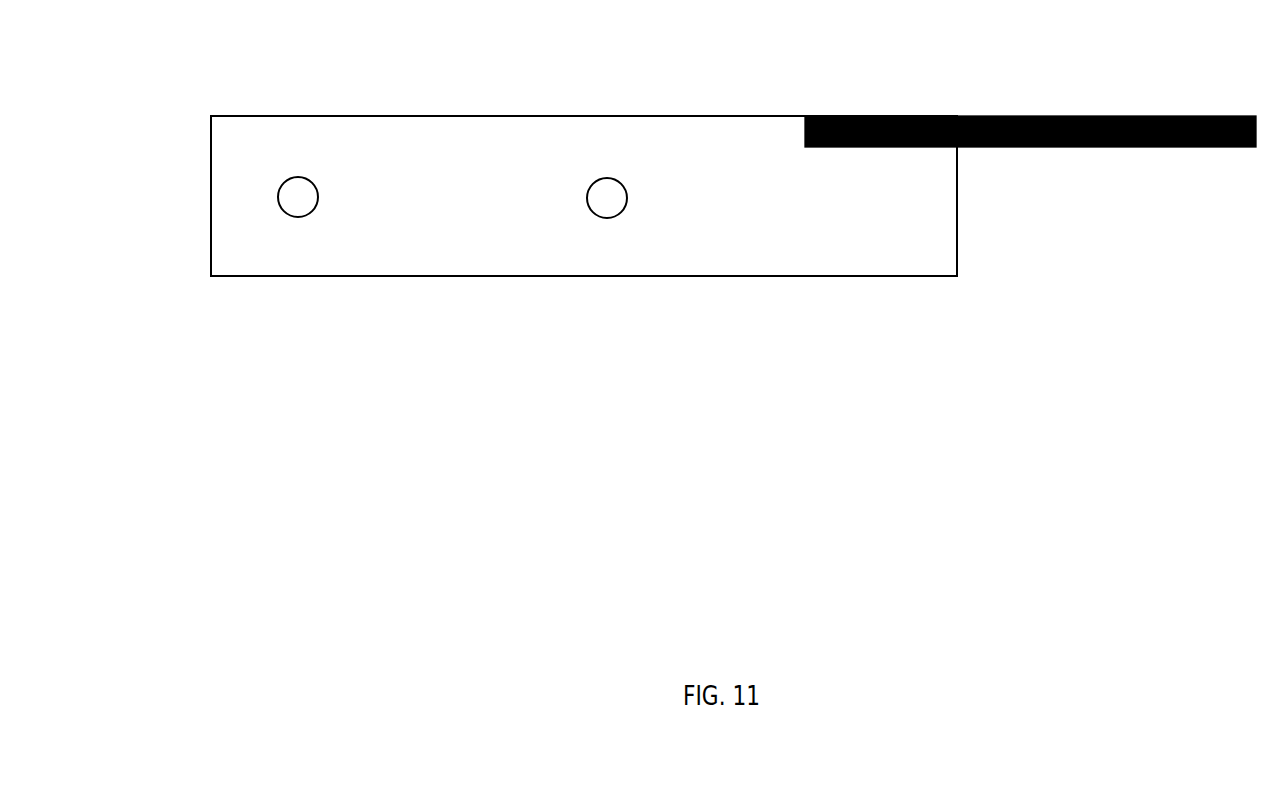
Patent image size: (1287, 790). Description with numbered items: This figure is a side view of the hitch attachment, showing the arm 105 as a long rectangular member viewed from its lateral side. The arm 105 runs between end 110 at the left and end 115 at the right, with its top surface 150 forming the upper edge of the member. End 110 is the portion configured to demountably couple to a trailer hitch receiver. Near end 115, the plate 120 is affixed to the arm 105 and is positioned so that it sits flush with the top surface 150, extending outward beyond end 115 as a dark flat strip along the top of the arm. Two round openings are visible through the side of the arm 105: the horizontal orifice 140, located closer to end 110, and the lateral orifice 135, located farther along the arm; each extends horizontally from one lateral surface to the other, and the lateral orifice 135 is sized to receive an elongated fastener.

The arm 105 is at (942, 266).
The end 110 is at (211, 207).
The top surface 150 is at (653, 116).
The end 115 is at (957, 203).
The plate 120 is at (1240, 144).
The lateral orifice 135 is at (607, 200).
The horizontal orifice 140 is at (298, 200).